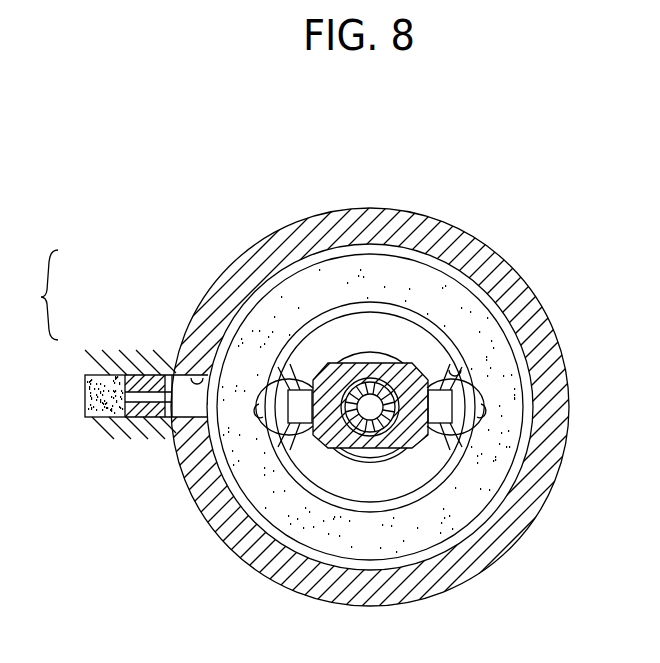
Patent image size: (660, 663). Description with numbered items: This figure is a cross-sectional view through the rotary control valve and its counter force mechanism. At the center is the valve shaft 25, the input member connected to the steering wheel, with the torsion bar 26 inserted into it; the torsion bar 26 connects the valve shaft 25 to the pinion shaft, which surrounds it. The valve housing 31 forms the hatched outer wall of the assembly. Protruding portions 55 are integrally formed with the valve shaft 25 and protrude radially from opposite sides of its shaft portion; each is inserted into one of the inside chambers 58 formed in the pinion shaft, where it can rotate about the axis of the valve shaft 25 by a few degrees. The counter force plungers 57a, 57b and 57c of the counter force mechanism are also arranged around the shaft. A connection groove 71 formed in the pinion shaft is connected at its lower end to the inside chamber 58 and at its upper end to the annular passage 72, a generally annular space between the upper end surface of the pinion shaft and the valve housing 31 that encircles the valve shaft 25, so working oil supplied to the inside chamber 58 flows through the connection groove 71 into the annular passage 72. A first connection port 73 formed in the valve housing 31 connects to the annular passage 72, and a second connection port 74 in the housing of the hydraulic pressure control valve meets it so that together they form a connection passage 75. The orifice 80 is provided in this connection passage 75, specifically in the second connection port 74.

The valve shaft 25 is at (414, 372).
The torsion bar 26 is at (394, 388).
The valve housing 31 is at (494, 264).
The protruding portions 55 is at (197, 375).
The counter force plunger 57a is at (455, 350).
The counter force plunger 57b is at (298, 380).
The counter force plunger 57c is at (280, 445).
The inside chambers 58 is at (455, 418).
The connection groove 71 is at (487, 420).
The annular passage 72 is at (455, 505).
The first connection port 73 is at (190, 378).
The second connection port 74 is at (100, 375).
The connection passage 75 is at (33, 295).
The orifice 80 is at (148, 412).